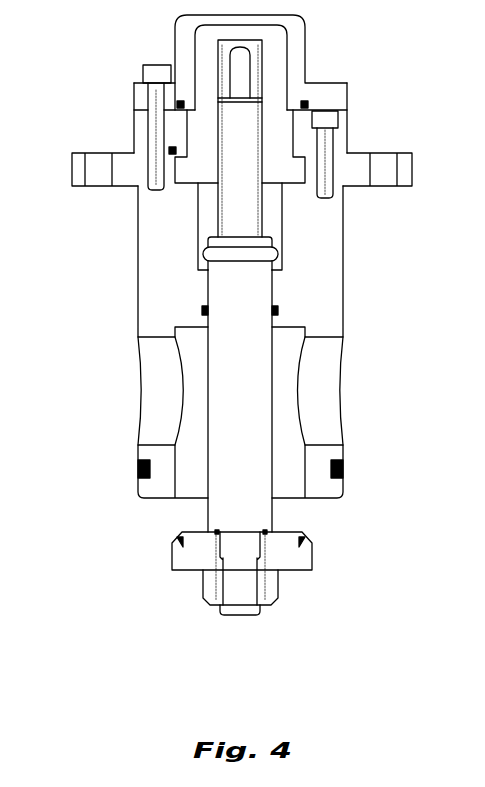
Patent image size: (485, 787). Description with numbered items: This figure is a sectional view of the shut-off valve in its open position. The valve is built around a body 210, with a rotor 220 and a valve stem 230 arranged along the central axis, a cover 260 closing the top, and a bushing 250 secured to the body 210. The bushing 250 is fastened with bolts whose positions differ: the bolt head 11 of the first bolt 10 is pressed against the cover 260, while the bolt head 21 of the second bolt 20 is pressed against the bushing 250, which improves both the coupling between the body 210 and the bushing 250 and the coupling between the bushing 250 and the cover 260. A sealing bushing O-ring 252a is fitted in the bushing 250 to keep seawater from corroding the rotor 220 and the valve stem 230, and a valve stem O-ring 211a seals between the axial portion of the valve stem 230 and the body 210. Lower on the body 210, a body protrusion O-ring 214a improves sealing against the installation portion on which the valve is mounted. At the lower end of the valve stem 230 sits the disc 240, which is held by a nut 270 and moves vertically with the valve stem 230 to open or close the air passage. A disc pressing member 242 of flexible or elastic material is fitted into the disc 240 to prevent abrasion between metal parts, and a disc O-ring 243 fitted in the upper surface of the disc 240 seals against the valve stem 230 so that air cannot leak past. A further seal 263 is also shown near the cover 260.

The first bolt 10 is at (157, 168).
The bolt head 11 is at (160, 75).
The second bolt 20 is at (326, 190).
The bolt head 21 is at (332, 118).
The body 210 is at (348, 262).
The valve stem O-ring 211a is at (280, 312).
The body protrusion O-ring 214a is at (344, 470).
The rotor 220 is at (309, 109).
The valve stem 230 is at (279, 400).
The disc 240 is at (299, 577).
The disc pressing member 242 is at (303, 541).
The disc O-ring 243 is at (265, 530).
The bushing 250 is at (352, 146).
The sealing bushing O-ring 252a is at (172, 148).
The cover 260 is at (314, 50).
The sealing member 263 is at (178, 104).
The nut 270 is at (275, 616).